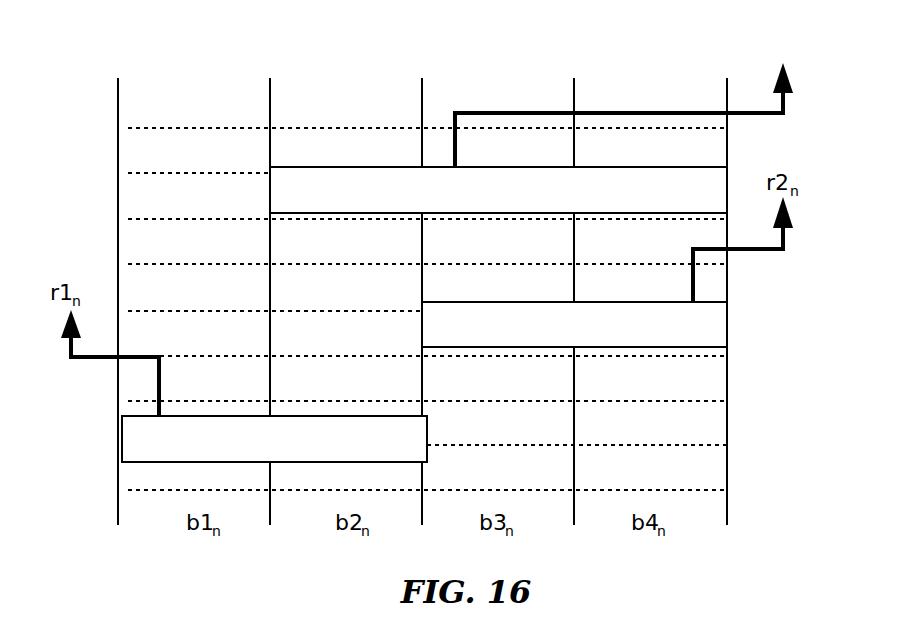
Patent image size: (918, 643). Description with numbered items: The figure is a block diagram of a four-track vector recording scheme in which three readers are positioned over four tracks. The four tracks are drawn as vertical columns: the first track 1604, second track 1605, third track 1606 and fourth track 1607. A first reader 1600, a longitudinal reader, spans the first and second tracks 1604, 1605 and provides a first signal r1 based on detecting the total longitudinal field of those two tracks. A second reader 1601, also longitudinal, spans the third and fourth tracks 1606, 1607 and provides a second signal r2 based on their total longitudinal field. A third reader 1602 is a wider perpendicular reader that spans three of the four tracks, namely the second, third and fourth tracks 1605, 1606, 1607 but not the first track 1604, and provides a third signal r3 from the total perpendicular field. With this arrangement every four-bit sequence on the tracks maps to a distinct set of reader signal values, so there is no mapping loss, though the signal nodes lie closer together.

The first reader 1600 is at (121, 440).
The second reader 1601 is at (420, 328).
The third reader 1602 is at (270, 200).
The first track 1604 is at (174, 92).
The second track 1605 is at (326, 92).
The third track 1606 is at (471, 92).
The fourth track 1607 is at (624, 92).